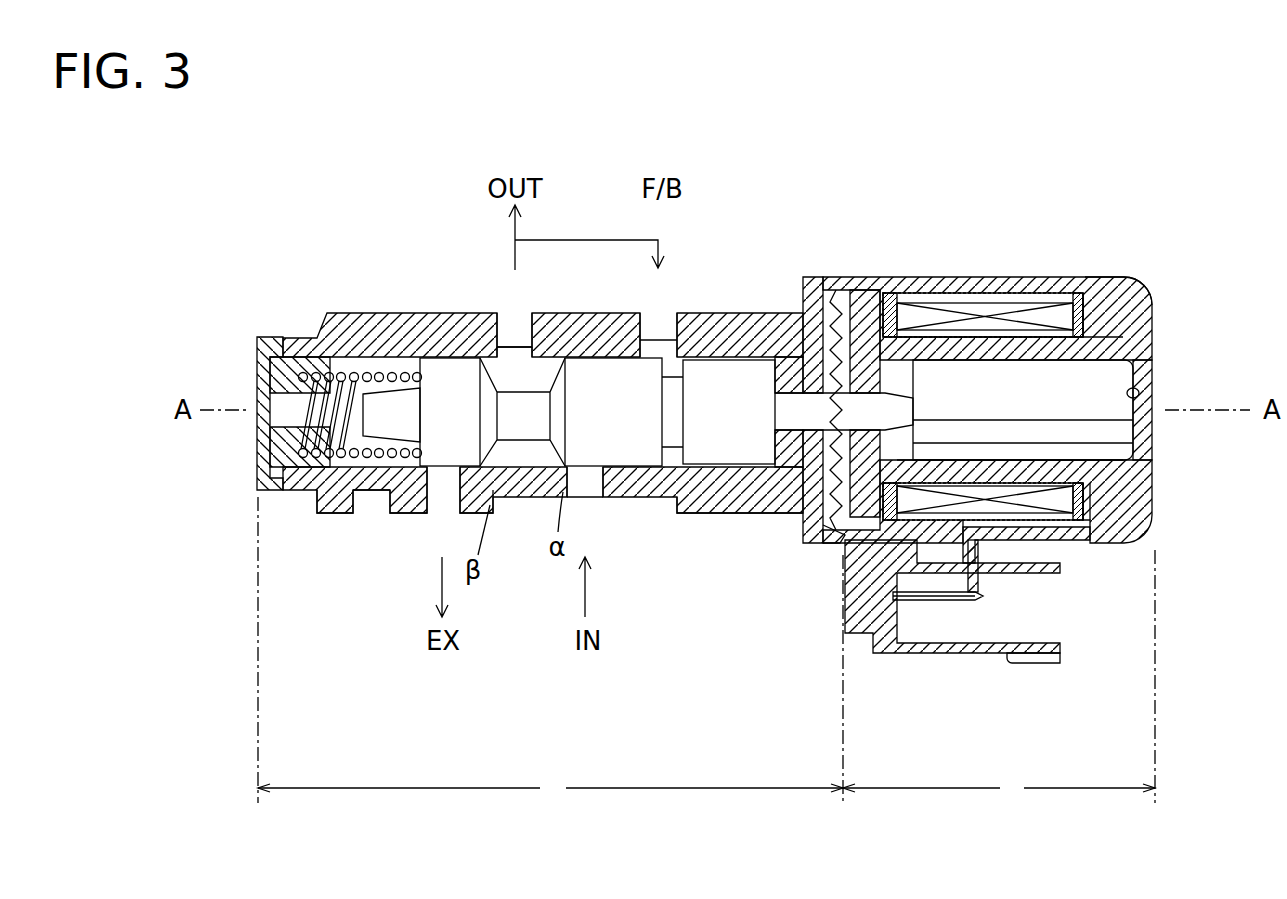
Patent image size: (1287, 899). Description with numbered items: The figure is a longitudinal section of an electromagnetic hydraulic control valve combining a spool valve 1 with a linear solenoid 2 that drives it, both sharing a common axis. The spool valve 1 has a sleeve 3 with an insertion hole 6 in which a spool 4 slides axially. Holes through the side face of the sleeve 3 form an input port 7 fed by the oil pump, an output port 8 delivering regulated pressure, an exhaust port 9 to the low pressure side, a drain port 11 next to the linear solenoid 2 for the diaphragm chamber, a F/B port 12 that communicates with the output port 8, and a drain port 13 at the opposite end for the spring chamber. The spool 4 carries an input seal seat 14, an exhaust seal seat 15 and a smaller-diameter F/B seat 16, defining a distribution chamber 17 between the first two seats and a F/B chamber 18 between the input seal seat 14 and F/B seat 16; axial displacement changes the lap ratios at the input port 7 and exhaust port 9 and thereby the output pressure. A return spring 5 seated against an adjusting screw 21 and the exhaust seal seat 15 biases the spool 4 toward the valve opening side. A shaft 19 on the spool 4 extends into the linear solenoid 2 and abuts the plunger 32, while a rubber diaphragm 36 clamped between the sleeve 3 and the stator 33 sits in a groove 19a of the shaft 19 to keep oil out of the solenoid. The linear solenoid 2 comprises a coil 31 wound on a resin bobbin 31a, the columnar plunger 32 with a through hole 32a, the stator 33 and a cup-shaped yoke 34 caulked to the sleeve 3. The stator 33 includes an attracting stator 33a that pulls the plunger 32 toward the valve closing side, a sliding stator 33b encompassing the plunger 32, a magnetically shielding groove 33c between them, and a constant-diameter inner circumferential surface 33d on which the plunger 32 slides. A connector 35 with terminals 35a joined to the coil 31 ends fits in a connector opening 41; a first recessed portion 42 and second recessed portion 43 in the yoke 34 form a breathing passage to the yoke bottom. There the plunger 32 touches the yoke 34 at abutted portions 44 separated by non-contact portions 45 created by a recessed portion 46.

The spool valve 1 is at (550, 650).
The linear solenoid 2 is at (999, 676).
The sleeve 3 is at (346, 327).
The spool 4 is at (517, 492).
The return spring 5 is at (330, 500).
The insertion hole 6 is at (390, 357).
The input port 7 is at (587, 497).
The output port 8 is at (516, 366).
The exhaust port 9 is at (440, 500).
The drain port 11 is at (787, 492).
The F/B port 12 is at (660, 330).
The drain port 13 is at (375, 505).
The input seal seat 14 is at (597, 370).
The exhaust seal seat 15 is at (443, 372).
The F/B seat 16 is at (715, 450).
The distribution chamber 17 is at (513, 345).
The F/B chamber 18 is at (685, 365).
The shaft 19 is at (810, 392).
The groove 19a is at (822, 283).
The adjusting screw 21 is at (292, 353).
The coil 31 is at (1065, 277).
The resin bobbin 31a is at (1085, 278).
The plunger 32 is at (1100, 352).
The hole 32a is at (1117, 426).
The stator 33 is at (862, 222).
The attracting stator 33a is at (870, 277).
The sliding stator 33b is at (1022, 278).
The magnetically shielding groove 33c is at (950, 278).
The inner circumferential surface 33d is at (1123, 285).
The yoke 34 is at (1128, 278).
The connector 35 is at (1050, 689).
The terminals 35a is at (950, 603).
The diaphragm 36 is at (833, 525).
The connector opening 41 is at (980, 575).
The first recessed portion 42 is at (1050, 538).
The second recessed portion 43 is at (1105, 500).
The abutted portions 44 is at (1100, 367).
The non-contact portions 45 is at (1150, 455).
The recessed portion 46 is at (1140, 396).